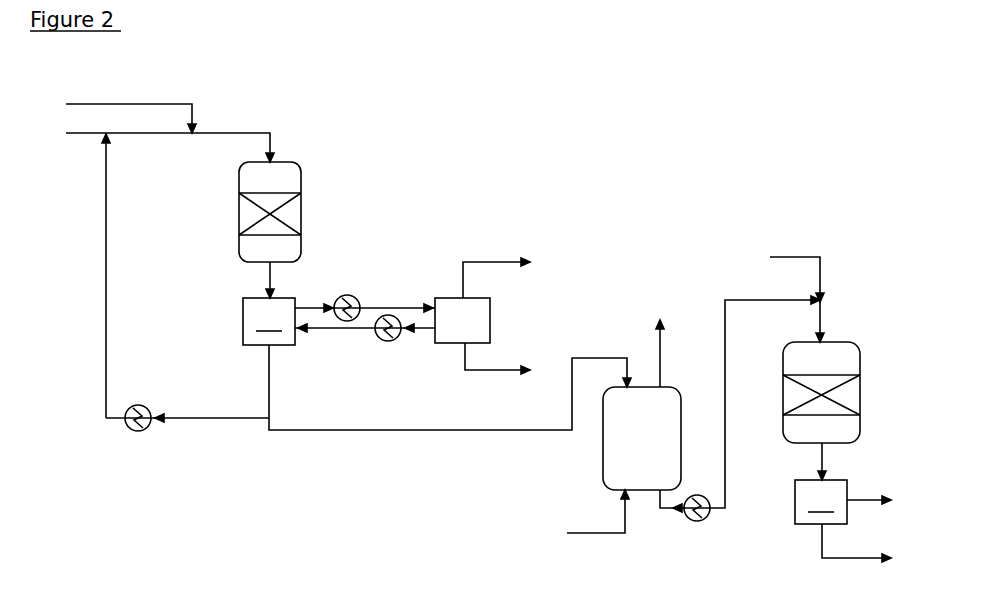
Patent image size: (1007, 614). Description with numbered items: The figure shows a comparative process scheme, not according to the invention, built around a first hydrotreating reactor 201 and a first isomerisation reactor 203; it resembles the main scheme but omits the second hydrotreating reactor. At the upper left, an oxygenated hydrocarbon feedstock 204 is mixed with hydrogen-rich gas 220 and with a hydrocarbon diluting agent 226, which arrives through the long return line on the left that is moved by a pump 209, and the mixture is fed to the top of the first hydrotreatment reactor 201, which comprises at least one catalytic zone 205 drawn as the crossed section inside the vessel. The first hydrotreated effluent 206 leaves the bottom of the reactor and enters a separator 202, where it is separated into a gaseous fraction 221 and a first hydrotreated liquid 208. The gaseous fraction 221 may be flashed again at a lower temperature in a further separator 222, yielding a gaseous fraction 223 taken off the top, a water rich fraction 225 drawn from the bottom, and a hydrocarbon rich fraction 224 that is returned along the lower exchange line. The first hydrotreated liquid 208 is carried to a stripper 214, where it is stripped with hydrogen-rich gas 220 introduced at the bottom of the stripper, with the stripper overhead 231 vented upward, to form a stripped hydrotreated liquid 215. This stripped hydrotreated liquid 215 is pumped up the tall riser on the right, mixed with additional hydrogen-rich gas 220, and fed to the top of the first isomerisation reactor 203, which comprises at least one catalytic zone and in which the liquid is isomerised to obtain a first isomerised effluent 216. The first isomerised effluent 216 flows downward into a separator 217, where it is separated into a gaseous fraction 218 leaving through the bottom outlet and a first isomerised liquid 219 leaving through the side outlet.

The first hydrotreating reactor 201 is at (301, 176).
The separator 202 is at (269, 321).
The first isomerisation reactor 203 is at (862, 357).
The oxygenated hydrocarbon feedstock 204 is at (113, 132).
The catalytic zone 205 is at (291, 214).
The first hydrotreated effluent 206 is at (263, 280).
The first hydrotreated liquid 208 is at (263, 393).
The recycle pump 209 is at (143, 431).
The stripper 214 is at (642, 438).
The stripped hydrotreated liquid 215 is at (763, 308).
The first isomerised effluent 216 is at (815, 462).
The separator 217 is at (821, 502).
The gaseous fraction 218 is at (815, 548).
The first isomerised liquid 219 is at (872, 500).
The hydrogen-rich gas 220 is at (112, 103).
The gaseous fraction 221 is at (316, 299).
The separator 222 is at (392, 320).
The gaseous fraction 223 is at (512, 258).
The hydrocarbon rich fraction 224 is at (424, 335).
The water rich fraction 225 is at (492, 375).
The hydrocarbon diluting agent 226 is at (106, 268).
The column overhead stream 231 is at (650, 340).